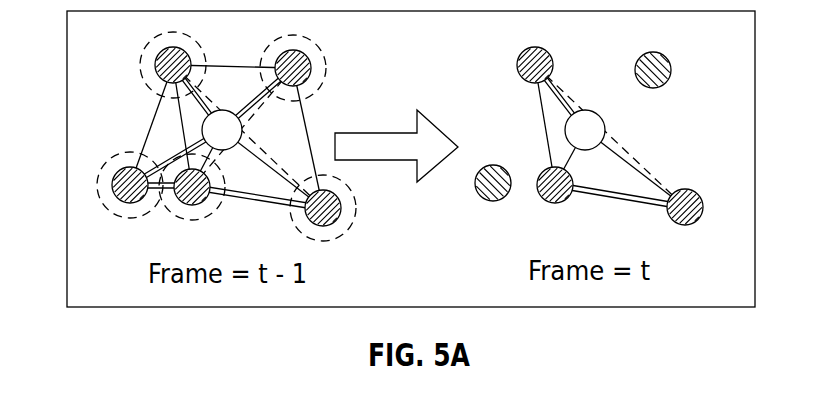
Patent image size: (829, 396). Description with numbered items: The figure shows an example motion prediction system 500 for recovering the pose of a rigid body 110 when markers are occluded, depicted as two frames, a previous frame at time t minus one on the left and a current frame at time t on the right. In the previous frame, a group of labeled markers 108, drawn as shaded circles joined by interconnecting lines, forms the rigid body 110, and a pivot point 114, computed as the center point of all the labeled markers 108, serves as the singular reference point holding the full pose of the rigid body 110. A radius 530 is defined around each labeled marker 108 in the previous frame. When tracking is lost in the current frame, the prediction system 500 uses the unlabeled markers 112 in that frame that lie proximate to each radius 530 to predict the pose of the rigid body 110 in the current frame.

The motion prediction system 500 is at (428, 52).
The labeled marker 108 is at (333, 223).
The rigid body 110 is at (124, 100).
The unlabeled marker 112 is at (668, 72).
The pivot point 114 is at (600, 126).
The radius 530 is at (342, 183).